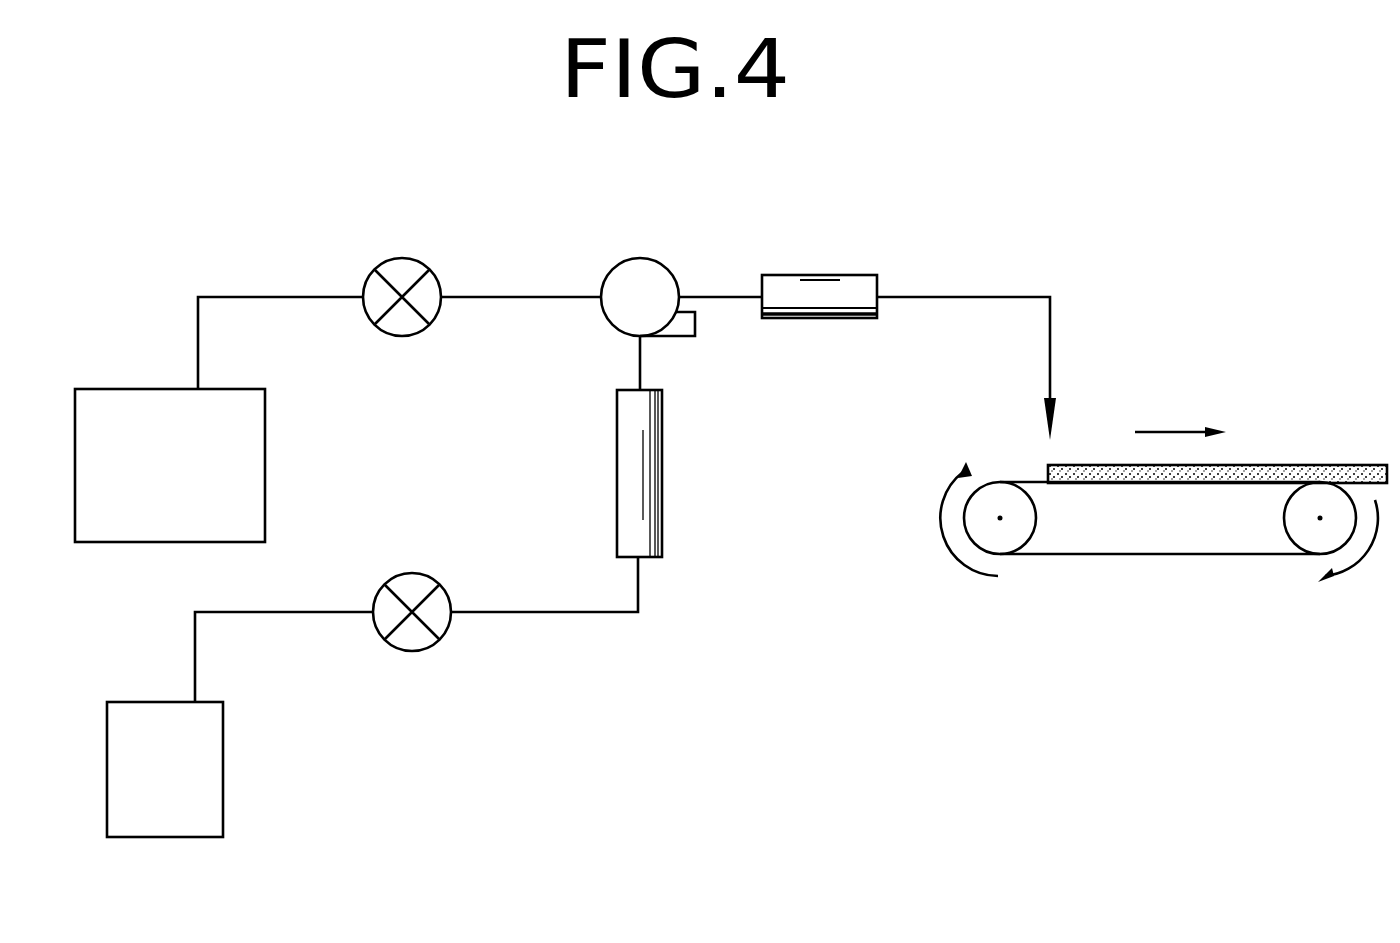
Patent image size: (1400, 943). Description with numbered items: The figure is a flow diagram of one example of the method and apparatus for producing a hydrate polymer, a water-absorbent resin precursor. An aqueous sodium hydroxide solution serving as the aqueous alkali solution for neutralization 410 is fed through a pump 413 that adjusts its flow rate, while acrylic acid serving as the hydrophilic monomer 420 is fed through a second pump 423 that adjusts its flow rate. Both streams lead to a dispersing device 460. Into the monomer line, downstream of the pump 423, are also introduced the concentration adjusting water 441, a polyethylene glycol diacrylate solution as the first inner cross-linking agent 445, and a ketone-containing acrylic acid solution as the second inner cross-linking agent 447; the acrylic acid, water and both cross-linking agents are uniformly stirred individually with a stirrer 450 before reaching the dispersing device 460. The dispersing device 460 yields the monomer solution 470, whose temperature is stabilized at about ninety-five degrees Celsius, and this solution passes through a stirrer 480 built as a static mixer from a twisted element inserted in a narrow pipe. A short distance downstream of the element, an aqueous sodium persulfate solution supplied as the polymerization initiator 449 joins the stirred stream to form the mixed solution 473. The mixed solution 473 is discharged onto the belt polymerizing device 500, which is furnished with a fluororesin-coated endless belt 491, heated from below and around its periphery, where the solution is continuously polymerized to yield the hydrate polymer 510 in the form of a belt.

The aqueous alkali solution for neutralization 410 is at (135, 389).
The pump 413 is at (403, 262).
The hydrophilic monomer 420 is at (150, 702).
The pump 423 is at (409, 576).
The concentration adjusting water 441 is at (518, 258).
The first inner cross-linking agent 445 is at (548, 640).
The second inner cross-linking agent 447 is at (607, 640).
The polymerization initiator 449 is at (905, 333).
The stirrer 450 is at (662, 496).
The dispersing device 460 is at (640, 264).
The monomer solution 470 is at (720, 295).
The mixed solution 473 is at (973, 295).
The stirrer 480 is at (819, 280).
The endless belt 491 is at (1013, 482).
The belt polymerizing device 500 is at (1027, 556).
The hydrate polymer 510 is at (1270, 465).